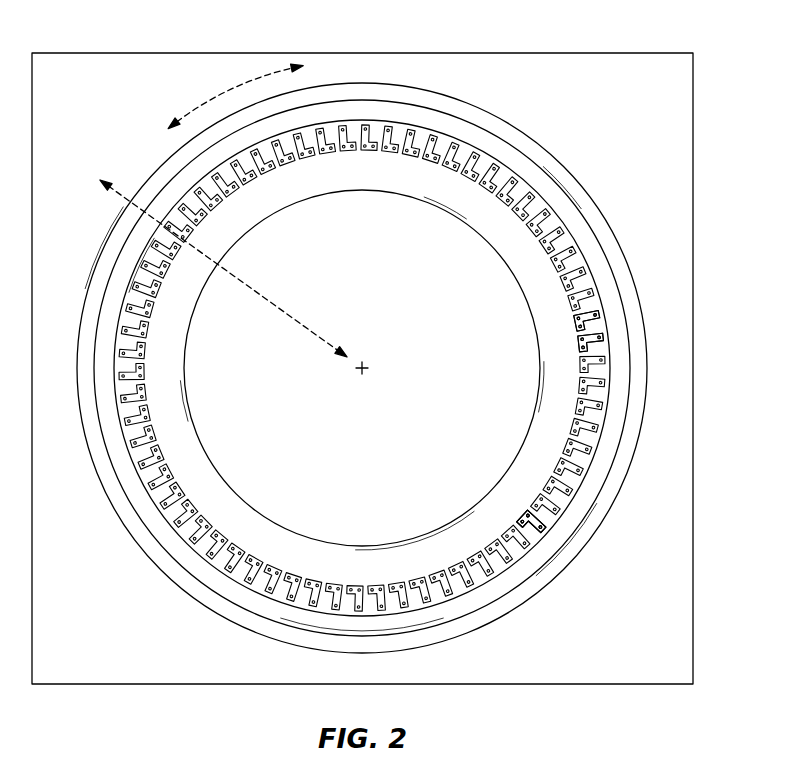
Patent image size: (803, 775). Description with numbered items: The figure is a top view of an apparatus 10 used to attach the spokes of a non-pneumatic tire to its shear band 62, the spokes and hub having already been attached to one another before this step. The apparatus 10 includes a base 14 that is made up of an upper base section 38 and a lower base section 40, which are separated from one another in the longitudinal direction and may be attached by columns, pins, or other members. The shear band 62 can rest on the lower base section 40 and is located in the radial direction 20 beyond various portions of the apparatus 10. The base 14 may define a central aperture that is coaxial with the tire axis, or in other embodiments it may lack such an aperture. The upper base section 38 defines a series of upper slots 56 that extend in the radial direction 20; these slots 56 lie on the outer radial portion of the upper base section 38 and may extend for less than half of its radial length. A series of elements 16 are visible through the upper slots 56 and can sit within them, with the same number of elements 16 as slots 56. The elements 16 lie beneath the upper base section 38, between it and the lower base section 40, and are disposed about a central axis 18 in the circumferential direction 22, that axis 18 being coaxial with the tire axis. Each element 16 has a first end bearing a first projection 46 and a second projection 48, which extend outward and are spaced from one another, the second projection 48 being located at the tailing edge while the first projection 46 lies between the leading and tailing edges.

The apparatus 10 is at (382, 326).
The base 14 is at (690, 218).
The elements 16 is at (588, 452).
The central axis 18 is at (363, 370).
The radial direction 20 is at (287, 312).
The circumferential direction 22 is at (210, 102).
The upper base section 38 is at (478, 218).
The lower base section 40 is at (556, 172).
The first projection 46 is at (525, 520).
The second projection 48 is at (532, 518).
The upper slots 56 is at (602, 330).
The shear band 62 is at (585, 228).